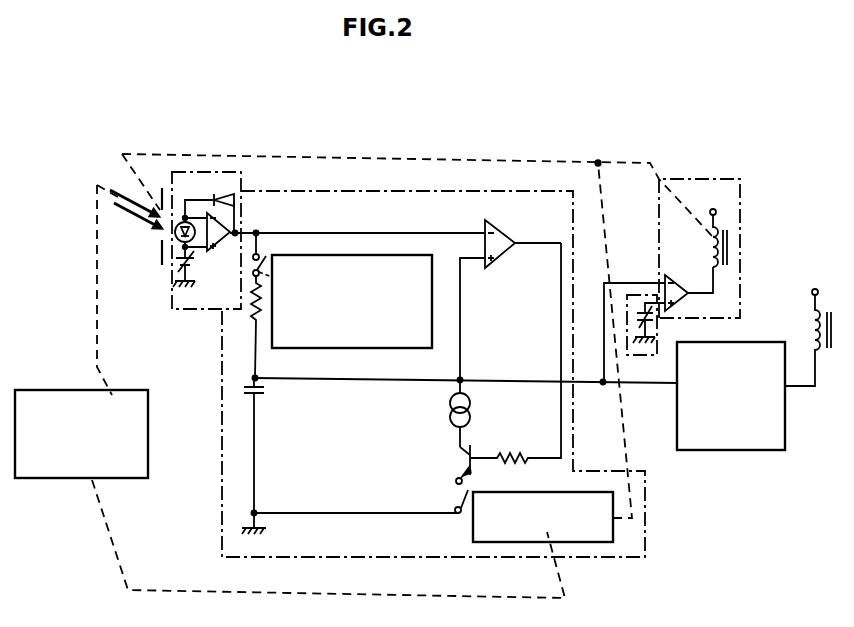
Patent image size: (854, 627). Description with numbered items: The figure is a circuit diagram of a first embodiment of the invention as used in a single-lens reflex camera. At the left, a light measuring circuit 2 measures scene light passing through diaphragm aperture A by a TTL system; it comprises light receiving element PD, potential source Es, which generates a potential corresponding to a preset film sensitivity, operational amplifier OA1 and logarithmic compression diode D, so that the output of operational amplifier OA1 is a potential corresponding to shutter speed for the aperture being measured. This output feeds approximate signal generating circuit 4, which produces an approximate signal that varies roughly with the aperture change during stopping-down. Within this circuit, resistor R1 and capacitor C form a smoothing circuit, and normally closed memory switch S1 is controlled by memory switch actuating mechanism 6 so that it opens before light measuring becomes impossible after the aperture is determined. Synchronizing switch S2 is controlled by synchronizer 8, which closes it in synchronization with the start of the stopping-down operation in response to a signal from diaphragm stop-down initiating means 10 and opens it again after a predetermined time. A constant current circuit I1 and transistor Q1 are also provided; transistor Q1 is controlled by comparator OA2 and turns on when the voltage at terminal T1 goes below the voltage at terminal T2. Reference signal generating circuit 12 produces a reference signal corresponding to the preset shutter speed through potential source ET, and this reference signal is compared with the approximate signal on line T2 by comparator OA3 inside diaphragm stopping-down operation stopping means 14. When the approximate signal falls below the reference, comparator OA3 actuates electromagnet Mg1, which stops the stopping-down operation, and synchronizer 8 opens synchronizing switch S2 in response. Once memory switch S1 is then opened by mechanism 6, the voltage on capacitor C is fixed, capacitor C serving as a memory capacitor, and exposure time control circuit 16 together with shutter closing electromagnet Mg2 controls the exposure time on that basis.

The light measuring circuit 2 is at (183, 312).
The approximate signal generating circuit 4 is at (628, 558).
The memory switch actuating mechanism 6 is at (433, 298).
The synchronizer 8 is at (472, 533).
The diaphragm stop-down initiating means 10 is at (148, 440).
The reference signal generating circuit 12 is at (658, 354).
The diaphragm stopping-down operation stopping means 14 is at (759, 285).
The exposure time control circuit 16 is at (727, 452).
The light receiving element PD is at (178, 222).
The logarithmic compression diode D is at (233, 192).
The diaphragm aperture A is at (160, 253).
The potential source Es is at (172, 270).
The operational amplifier OA1 is at (221, 253).
The comparator OA2 is at (507, 250).
The comparator OA3 is at (687, 260).
The memory switch S1 is at (259, 256).
The synchronizing switch S2 is at (455, 482).
The resistor R1 is at (262, 323).
The capacitor C is at (264, 392).
The terminal T1 is at (418, 231).
The terminal T2 is at (470, 262).
The constant current circuit I1 is at (449, 410).
The transistor Q1 is at (464, 461).
The potential source ET is at (637, 307).
The electromagnet Mg1 is at (732, 245).
The shutter closing electromagnet Mg2 is at (840, 340).